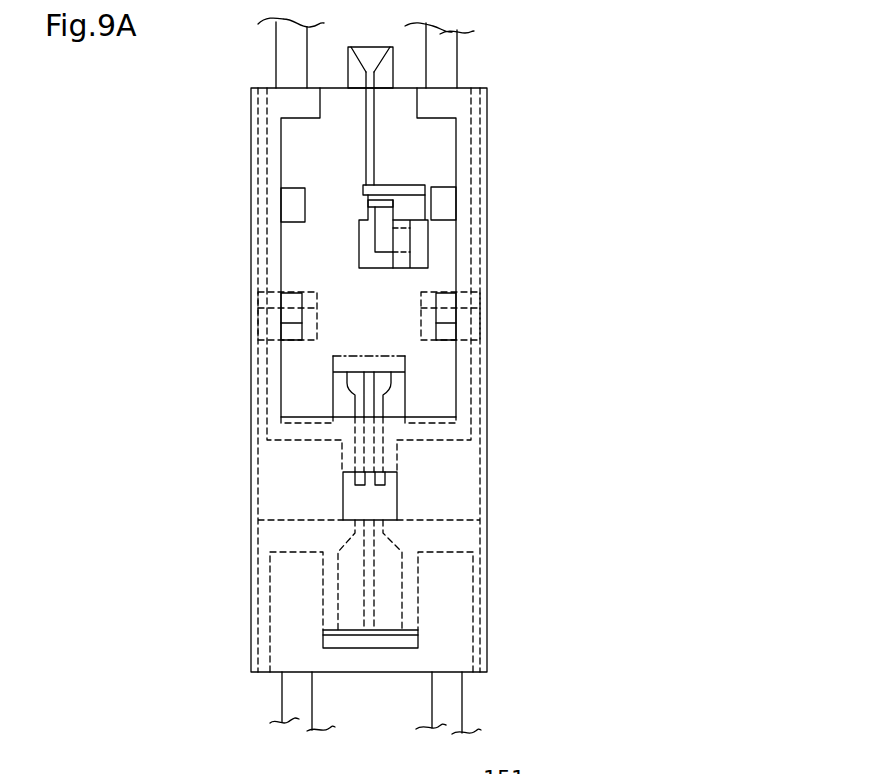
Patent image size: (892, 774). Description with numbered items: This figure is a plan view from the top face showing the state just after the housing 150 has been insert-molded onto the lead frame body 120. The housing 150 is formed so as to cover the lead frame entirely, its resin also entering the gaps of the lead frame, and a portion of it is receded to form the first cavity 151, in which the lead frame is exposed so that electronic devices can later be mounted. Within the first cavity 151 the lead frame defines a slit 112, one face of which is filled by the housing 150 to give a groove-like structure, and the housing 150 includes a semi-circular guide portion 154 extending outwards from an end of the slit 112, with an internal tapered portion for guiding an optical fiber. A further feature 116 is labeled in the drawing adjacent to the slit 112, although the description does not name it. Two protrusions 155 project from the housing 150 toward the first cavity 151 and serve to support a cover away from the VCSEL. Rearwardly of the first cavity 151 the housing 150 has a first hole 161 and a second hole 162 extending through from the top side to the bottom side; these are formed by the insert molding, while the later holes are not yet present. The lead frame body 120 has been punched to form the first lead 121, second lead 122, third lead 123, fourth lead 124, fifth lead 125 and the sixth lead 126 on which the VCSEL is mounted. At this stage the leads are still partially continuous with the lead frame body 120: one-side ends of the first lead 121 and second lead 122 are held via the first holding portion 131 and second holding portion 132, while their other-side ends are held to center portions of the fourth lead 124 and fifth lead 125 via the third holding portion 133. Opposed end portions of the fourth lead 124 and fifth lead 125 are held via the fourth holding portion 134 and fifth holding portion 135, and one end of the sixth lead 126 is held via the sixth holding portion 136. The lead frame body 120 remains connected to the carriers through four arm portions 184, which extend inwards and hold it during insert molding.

The arm portions 184 is at (278, 50).
The guide portion 154 is at (388, 65).
The first cavity 151 is at (428, 140).
The slit 112 is at (375, 155).
The nozzle tip 116 is at (372, 200).
The protrusions 155 is at (292, 203).
The sixth holding portion 136 is at (420, 230).
The sixth lead 126 is at (383, 238).
The second holding portion 132 is at (300, 317).
The first holding portion 131 is at (428, 315).
The fourth holding portion 134 is at (340, 362).
The first hole 161 is at (397, 505).
The third holding portion 133 is at (352, 501).
The second lead 122 is at (283, 482).
The lead frame body 120 is at (487, 463).
The first lead 121 is at (472, 498).
The housing 150 is at (487, 540).
The third lead 123 is at (300, 612).
The fourth lead 124 is at (390, 607).
The fifth lead 125 is at (347, 617).
The fifth holding portion 135 is at (407, 642).
The second hole 162 is at (372, 645).